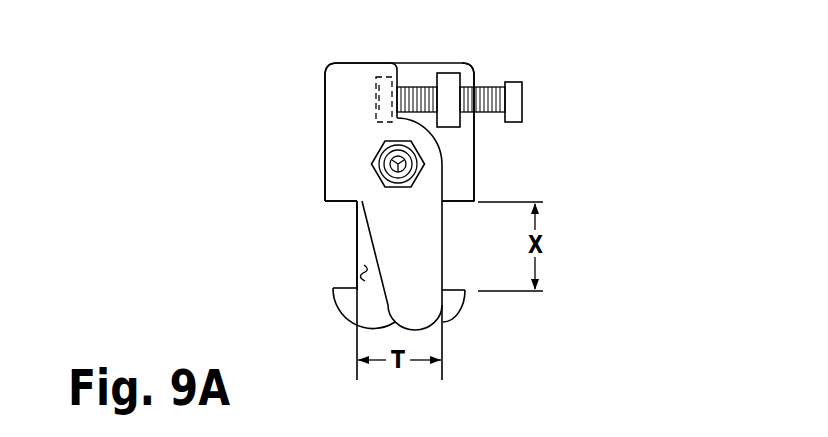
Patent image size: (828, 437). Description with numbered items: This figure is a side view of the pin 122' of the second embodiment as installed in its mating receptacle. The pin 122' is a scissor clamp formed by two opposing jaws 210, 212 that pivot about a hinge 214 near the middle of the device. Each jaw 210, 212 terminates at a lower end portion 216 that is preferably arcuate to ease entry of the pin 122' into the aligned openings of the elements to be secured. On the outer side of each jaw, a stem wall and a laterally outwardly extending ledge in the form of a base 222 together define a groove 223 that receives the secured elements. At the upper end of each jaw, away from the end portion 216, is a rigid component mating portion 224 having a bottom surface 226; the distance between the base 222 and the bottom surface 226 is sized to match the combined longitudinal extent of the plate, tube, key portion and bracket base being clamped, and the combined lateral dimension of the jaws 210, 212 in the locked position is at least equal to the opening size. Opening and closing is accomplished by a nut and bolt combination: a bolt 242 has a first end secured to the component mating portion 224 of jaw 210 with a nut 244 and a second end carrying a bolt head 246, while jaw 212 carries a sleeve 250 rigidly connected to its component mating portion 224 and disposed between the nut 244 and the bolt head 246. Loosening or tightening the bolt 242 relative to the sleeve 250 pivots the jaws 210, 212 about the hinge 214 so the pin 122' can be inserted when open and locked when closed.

The pin 122' is at (507, 128).
The jaw 210 is at (358, 273).
The jaw 212 is at (422, 245).
The hinge 214 is at (392, 158).
The lower end portion 216 is at (347, 322).
The base 222 is at (342, 287).
The groove 223 is at (336, 246).
The component mating portion 224 is at (347, 98).
The bottom surface 226 is at (333, 203).
The bolt 242 is at (414, 80).
The nut 244 is at (376, 76).
The bolt head 246 is at (515, 80).
The sleeve 250 is at (445, 101).